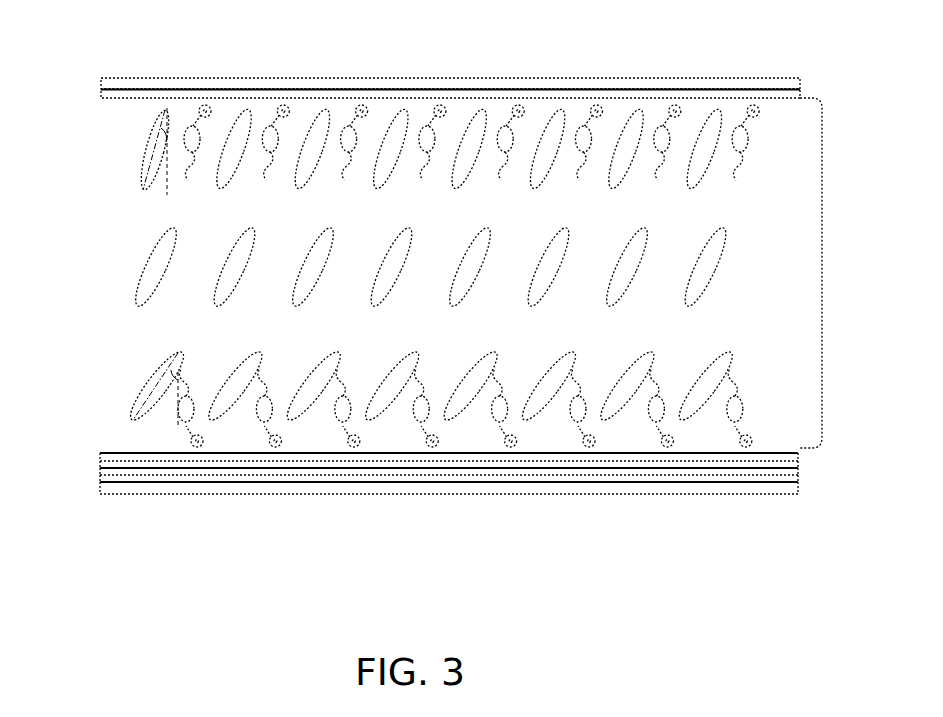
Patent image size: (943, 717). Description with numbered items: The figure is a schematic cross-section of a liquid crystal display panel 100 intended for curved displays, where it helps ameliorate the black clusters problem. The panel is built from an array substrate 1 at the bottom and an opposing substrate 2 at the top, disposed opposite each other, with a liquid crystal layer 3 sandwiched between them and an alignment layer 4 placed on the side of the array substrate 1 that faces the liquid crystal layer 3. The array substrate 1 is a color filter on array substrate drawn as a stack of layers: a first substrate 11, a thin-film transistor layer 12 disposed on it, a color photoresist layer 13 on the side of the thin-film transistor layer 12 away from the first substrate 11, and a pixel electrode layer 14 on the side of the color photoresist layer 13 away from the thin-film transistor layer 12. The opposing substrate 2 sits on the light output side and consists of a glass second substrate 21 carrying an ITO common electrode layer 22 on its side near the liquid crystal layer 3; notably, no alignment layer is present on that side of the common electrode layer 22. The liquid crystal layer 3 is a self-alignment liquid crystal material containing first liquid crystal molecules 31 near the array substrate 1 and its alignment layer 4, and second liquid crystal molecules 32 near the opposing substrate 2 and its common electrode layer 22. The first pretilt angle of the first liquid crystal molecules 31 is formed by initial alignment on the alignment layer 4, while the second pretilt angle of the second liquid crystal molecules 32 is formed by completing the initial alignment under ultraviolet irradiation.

The liquid crystal display panel 100 is at (108, 60).
The opposing substrate 2 is at (33, 85).
The second substrate 21 is at (100, 83).
The common electrode layer 22 is at (100, 97).
The liquid crystal layer 3 is at (822, 265).
The second liquid crystal molecules 32 is at (143, 173).
The first liquid crystal molecules 31 is at (148, 392).
The array substrate 1 is at (645, 537).
The first substrate 11 is at (467, 490).
The thin-film transistor layer 12 is at (523, 477).
The color photoresist layer 13 is at (563, 470).
The pixel electrode layer 14 is at (612, 461).
The alignment layer 4 is at (800, 455).